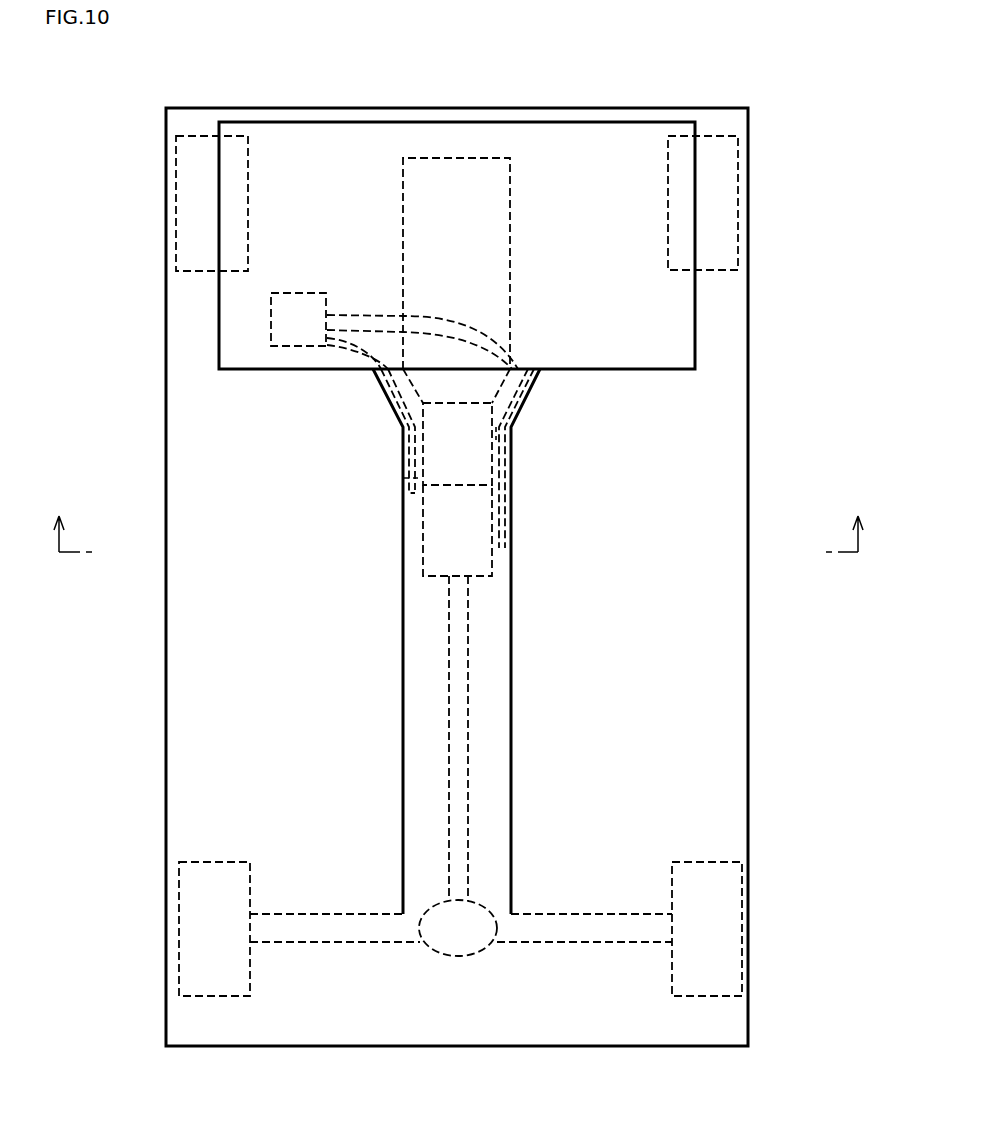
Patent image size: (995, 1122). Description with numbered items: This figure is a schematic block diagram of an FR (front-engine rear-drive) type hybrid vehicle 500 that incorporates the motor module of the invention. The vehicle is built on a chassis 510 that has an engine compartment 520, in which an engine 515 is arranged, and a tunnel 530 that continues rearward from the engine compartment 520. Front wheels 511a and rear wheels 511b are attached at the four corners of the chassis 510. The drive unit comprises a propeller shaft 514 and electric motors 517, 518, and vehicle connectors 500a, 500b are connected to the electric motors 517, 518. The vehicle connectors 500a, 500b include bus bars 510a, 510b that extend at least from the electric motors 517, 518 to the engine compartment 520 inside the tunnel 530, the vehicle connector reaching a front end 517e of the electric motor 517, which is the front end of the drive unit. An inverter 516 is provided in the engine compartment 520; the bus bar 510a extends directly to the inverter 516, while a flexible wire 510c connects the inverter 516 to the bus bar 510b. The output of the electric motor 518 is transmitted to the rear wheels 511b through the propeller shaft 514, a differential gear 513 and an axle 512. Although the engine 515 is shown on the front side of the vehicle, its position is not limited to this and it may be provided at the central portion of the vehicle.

The hybrid vehicle 500 is at (140, 710).
The vehicle connector 500a is at (390, 478).
The vehicle connector 500b is at (520, 474).
The chassis 510 is at (750, 591).
The bus bar 510a is at (407, 458).
The bus bar 510b is at (492, 403).
The flexible wire 510c is at (534, 369).
The front wheels 511a is at (176, 207).
The rear wheels 511b is at (180, 933).
The axle 512 is at (332, 942).
The differential gear 513 is at (458, 957).
The propeller shaft 514 is at (478, 722).
The engine 515 is at (452, 158).
The inverter 516 is at (270, 325).
The electric motor 517 is at (397, 483).
The front end of electric motor 517e is at (536, 386).
The electric motor 518 is at (455, 548).
The engine compartment 520 is at (591, 122).
The tunnel 530 is at (513, 669).